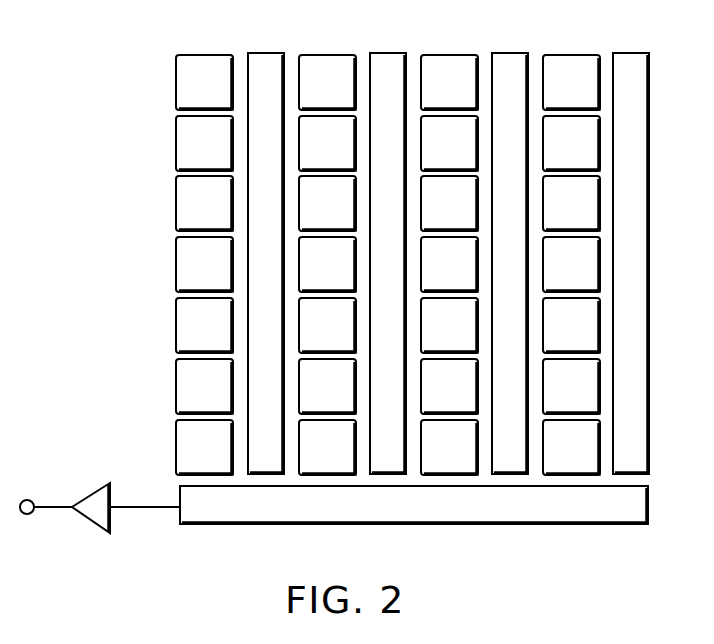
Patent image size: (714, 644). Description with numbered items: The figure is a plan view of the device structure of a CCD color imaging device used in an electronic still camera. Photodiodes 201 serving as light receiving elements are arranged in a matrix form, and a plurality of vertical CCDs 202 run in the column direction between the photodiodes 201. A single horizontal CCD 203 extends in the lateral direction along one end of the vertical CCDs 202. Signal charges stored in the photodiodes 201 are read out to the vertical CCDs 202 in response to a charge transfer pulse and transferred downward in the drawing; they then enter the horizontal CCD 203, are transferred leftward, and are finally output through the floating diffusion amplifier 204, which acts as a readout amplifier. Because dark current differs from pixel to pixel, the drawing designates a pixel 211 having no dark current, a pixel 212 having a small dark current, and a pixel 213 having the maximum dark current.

The photodiode 201 is at (176, 79).
The vertical CCD 202 is at (261, 53).
The horizontal CCD 203 is at (461, 526).
The floating diffusion amplifier 204 is at (90, 495).
The pixel having no dark current 211 is at (326, 54).
The pixel having a small dark current 212 is at (443, 54).
The pixel having the maximum dark current 213 is at (562, 54).